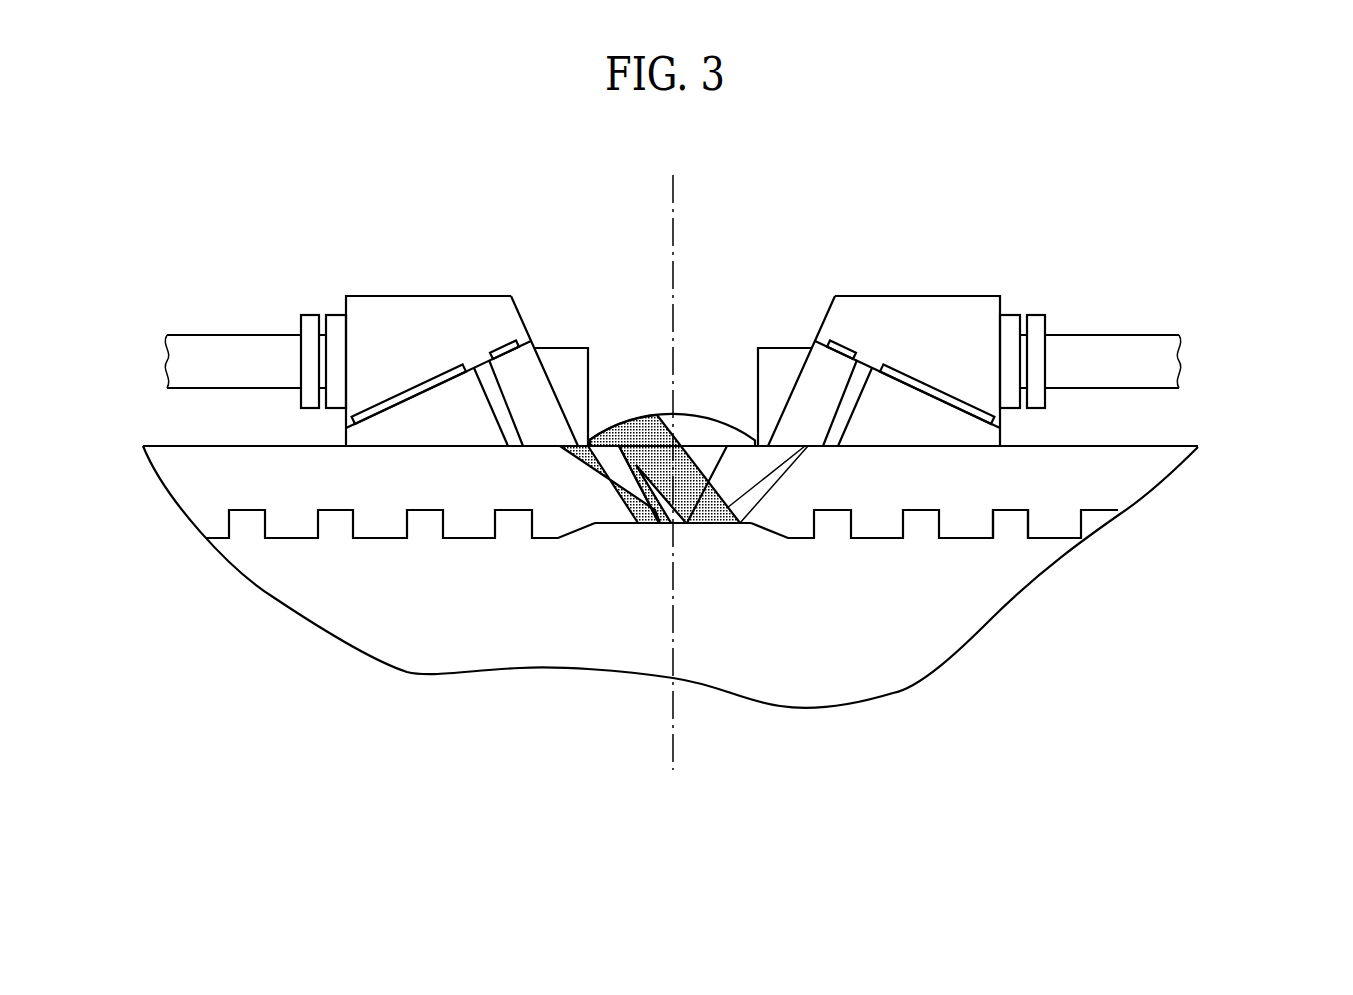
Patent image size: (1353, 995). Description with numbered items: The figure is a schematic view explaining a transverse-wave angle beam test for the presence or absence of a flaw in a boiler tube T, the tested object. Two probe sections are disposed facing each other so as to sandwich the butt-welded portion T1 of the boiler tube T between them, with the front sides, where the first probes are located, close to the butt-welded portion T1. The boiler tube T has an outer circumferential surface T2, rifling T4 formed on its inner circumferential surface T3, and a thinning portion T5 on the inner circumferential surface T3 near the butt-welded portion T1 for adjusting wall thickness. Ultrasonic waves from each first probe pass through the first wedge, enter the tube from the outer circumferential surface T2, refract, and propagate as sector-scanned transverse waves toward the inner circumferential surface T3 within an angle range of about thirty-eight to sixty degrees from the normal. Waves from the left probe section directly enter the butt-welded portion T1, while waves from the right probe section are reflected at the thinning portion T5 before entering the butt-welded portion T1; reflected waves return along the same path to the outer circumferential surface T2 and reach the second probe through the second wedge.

The boiler tube T is at (1264, 496).
The butt-welded portion T1 is at (682, 413).
The outer circumferential surface T2 is at (1178, 445).
The inner circumferential surface T3 is at (875, 540).
The rifling T4 is at (1010, 513).
The thinning portion T5 is at (713, 527).